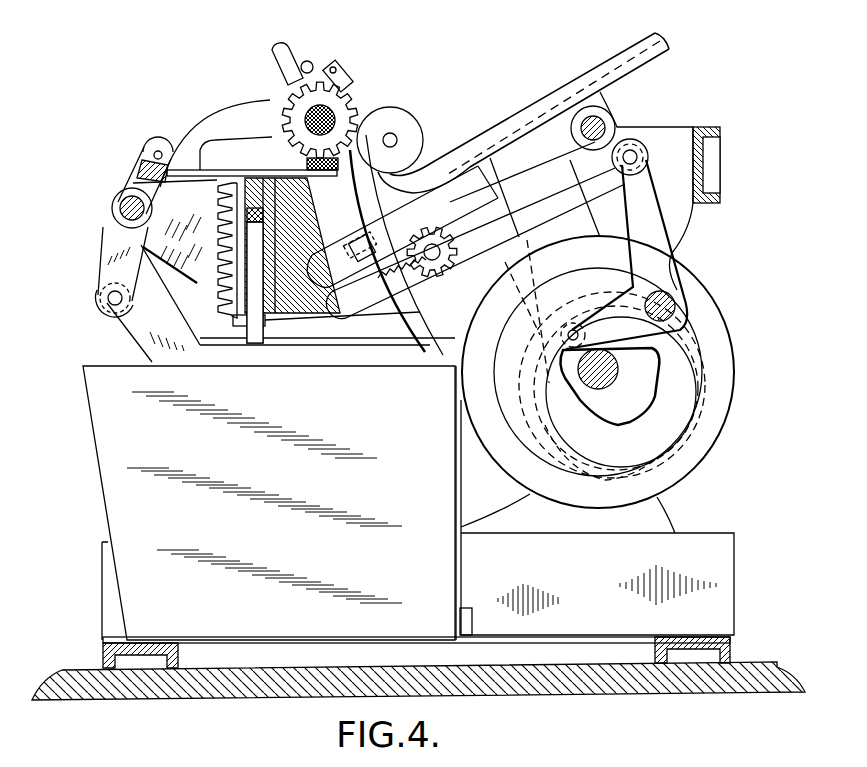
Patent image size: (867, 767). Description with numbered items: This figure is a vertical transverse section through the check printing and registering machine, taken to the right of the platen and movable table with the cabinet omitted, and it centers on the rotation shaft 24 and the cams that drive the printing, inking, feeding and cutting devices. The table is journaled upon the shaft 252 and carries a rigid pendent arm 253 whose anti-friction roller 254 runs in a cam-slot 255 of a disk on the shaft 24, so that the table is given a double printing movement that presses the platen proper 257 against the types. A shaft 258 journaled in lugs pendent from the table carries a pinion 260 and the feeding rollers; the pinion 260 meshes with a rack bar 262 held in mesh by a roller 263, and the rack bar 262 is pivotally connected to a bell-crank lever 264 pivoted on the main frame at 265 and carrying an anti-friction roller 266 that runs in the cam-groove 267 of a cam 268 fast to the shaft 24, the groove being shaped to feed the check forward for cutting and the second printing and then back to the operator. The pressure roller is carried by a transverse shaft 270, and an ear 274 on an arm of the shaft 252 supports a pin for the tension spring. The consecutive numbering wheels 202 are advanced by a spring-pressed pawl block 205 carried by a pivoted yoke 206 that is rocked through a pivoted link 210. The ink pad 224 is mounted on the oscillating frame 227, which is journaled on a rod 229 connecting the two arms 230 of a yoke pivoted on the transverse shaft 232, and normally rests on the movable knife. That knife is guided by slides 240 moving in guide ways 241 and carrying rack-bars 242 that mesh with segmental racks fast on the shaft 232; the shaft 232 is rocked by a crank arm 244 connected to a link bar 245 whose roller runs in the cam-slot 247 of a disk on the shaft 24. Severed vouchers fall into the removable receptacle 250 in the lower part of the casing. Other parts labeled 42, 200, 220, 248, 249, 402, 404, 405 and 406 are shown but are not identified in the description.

The rotation shaft 24 is at (604, 386).
The ratchet gear 42 is at (340, 115).
The frame plate 200 is at (202, 203).
The consecutive numbering wheels 202 is at (652, 223).
The pawl block 205 is at (268, 112).
The pivoted yoke 206 is at (285, 108).
The pivoted link 210 is at (222, 118).
The plate 220 is at (262, 163).
The ink pad 224 is at (322, 172).
The oscillating frame 227 is at (205, 168).
The rod 229 is at (154, 155).
The arms 230 is at (137, 178).
The transverse shaft 232 is at (112, 208).
The guiding slides 240 is at (327, 284).
The guide ways 241 is at (345, 70).
The rack-bars 242 is at (350, 80).
The crank arm 244 is at (285, 72).
The link bar 245 is at (296, 353).
The cam-slot 247 is at (286, 52).
The pivot pin 248 is at (315, 64).
The spring 249 is at (153, 303).
The removable receptacle 250 is at (269, 503).
The shaft 252 is at (612, 124).
The pendent arm 253 is at (522, 172).
The anti-friction roller 254 is at (562, 372).
The cam-slot 255 is at (570, 458).
The platen 257 is at (352, 236).
The shaft 258 is at (440, 240).
The pinion 260 is at (428, 236).
The rack bar 262 is at (475, 243).
The roller 263 is at (432, 322).
The bell-crank lever 264 is at (700, 452).
The pivot 265 is at (690, 300).
The anti-friction roller 266 is at (577, 322).
The cam-groove 267 is at (645, 385).
The cam 268 is at (690, 407).
The transverse shaft 270 is at (400, 140).
The ear 274 is at (545, 195).
The lever 402 is at (510, 112).
The plate 404 is at (315, 321).
The hub 405 is at (410, 126).
The link 406 is at (360, 208).